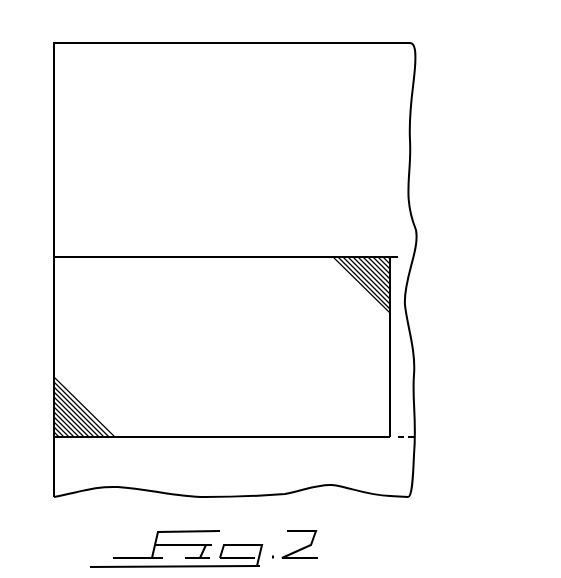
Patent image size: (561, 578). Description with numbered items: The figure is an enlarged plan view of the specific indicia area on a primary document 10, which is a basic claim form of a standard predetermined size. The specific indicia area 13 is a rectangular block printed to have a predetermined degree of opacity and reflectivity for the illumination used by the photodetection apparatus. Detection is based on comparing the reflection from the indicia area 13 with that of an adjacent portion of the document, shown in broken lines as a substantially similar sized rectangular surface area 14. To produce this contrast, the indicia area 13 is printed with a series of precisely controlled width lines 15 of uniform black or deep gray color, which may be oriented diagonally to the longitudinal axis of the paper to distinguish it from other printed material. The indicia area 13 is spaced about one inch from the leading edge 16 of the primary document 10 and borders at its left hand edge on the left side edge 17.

The primary document 10 is at (288, 141).
The specific indicia area 13 is at (136, 257).
The adjacent rectangular surface area 14 is at (398, 257).
The controlled width lines 15 is at (95, 438).
The leading edge 16 is at (205, 14).
The left side edge 17 is at (54, 92).